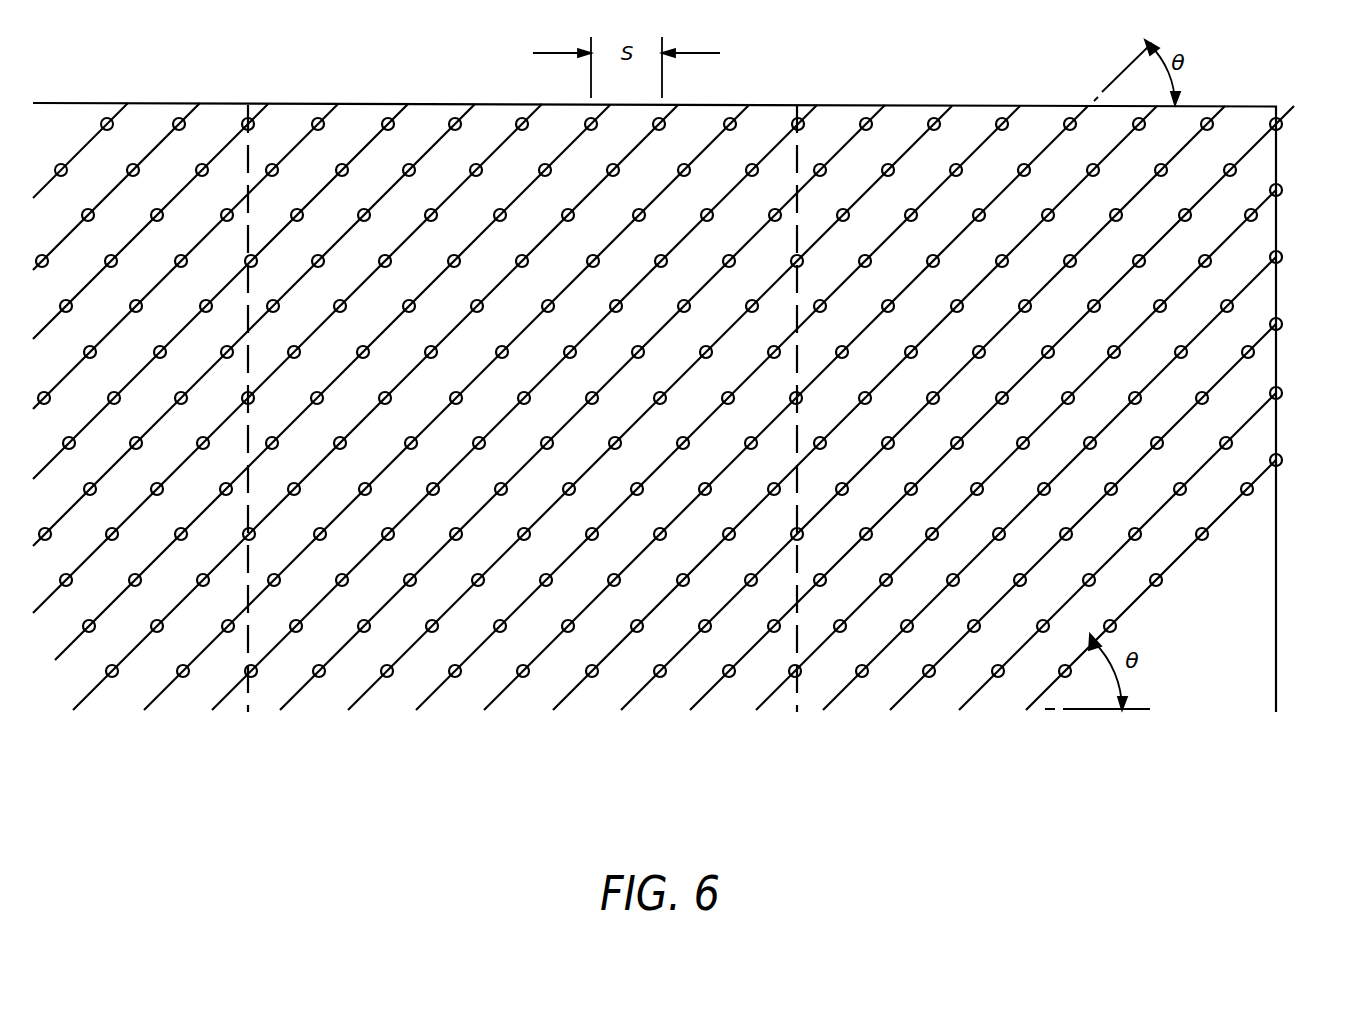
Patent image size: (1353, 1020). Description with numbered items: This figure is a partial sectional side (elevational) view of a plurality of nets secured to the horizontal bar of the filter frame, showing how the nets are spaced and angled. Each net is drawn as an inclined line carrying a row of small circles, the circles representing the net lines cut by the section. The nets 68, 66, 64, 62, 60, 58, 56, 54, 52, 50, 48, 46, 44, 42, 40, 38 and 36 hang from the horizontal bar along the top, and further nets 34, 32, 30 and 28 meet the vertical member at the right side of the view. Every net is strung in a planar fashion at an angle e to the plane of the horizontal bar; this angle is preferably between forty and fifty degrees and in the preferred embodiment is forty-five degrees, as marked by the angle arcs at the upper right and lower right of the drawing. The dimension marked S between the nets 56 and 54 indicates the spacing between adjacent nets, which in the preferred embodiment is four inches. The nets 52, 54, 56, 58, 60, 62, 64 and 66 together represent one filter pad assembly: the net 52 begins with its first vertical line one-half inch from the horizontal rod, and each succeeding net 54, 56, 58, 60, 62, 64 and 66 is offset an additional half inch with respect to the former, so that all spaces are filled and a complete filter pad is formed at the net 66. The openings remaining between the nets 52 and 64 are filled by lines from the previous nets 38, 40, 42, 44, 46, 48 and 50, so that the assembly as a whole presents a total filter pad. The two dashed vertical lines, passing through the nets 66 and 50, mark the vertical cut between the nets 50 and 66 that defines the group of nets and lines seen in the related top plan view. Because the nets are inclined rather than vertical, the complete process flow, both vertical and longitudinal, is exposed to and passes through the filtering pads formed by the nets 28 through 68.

The net 28 is at (1283, 393).
The net 30 is at (1283, 324).
The net 32 is at (1283, 257).
The net 34 is at (1283, 190).
The net 36 is at (1282, 118).
The net 38 is at (1211, 118).
The net 40 is at (1137, 118).
The net 42 is at (1066, 118).
The net 44 is at (998, 118).
The net 46 is at (930, 118).
The net 48 is at (862, 118).
The net 50 is at (794, 118).
The net 52 is at (726, 118).
The net 54 is at (655, 118).
The net 56 is at (587, 118).
The net 58 is at (518, 118).
The net 60 is at (451, 118).
The net 62 is at (384, 118).
The net 64 is at (314, 118).
The net 66 is at (244, 118).
The net 68 is at (175, 118).